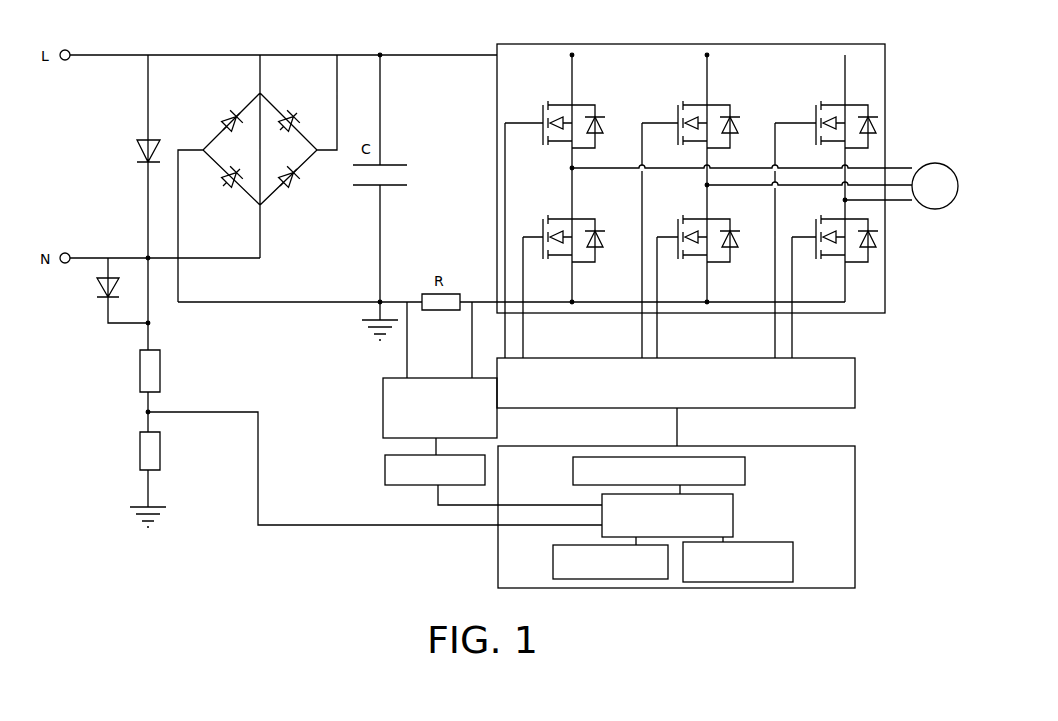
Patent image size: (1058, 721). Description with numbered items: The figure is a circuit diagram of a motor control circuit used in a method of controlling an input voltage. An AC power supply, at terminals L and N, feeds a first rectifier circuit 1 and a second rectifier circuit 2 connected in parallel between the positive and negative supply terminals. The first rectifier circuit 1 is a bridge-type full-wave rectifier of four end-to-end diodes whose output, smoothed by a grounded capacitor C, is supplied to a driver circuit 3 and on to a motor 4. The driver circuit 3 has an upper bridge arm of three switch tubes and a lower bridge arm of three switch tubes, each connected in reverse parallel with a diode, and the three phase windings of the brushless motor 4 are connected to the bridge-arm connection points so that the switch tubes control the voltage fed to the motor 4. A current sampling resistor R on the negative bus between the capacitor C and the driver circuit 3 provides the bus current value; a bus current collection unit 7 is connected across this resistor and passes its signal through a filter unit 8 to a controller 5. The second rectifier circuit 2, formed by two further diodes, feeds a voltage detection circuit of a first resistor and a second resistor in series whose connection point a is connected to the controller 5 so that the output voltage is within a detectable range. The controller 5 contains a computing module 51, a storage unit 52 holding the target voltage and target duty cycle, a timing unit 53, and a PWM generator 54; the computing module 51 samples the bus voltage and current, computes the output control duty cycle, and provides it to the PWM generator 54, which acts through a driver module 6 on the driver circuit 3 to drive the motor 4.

The first rectifier circuit 1 is at (239, 96).
The second rectifier circuit 2 is at (133, 127).
The driver circuit 3 is at (627, 43).
The motor 4 is at (942, 162).
The controller 5 is at (855, 487).
The driver module 6 is at (855, 372).
The bus current collection unit 7 is at (383, 405).
The filter unit 8 is at (385, 470).
The computing module 51 is at (733, 514).
The storage unit 52 is at (553, 563).
The timing unit 53 is at (793, 562).
The PWM generator 54 is at (745, 470).